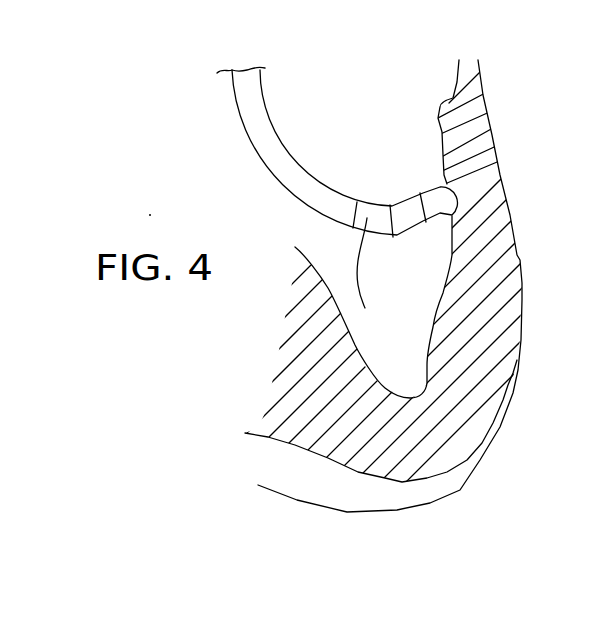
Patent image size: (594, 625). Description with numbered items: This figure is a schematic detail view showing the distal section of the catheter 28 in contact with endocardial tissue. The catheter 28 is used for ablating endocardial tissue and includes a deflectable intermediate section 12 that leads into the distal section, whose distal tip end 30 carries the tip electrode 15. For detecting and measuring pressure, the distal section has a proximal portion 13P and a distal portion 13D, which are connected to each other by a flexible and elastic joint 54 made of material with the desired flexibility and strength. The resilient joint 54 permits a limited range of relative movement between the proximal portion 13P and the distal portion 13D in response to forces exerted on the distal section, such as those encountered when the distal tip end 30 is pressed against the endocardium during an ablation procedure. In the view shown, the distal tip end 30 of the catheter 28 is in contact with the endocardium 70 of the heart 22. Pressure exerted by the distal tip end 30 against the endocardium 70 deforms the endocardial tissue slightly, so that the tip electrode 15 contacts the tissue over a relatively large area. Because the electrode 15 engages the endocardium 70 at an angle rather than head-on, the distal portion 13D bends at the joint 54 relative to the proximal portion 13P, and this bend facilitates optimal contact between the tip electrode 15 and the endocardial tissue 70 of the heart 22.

The deflectable intermediate section 12 is at (312, 187).
The distal portion 13D is at (403, 208).
The proximal portion 13P is at (377, 277).
The tip electrode 15 is at (430, 197).
The heart 22 is at (497, 135).
The catheter 28 is at (361, 98).
The distal tip end 30 is at (450, 187).
The flexible and elastic joint 54 is at (393, 237).
The endocardium 70 is at (447, 108).